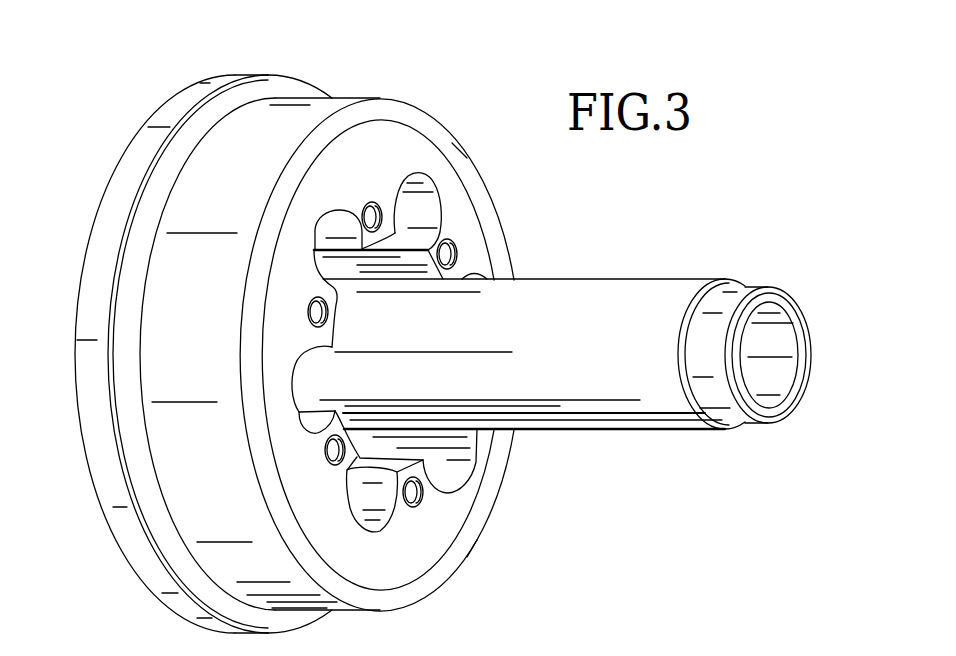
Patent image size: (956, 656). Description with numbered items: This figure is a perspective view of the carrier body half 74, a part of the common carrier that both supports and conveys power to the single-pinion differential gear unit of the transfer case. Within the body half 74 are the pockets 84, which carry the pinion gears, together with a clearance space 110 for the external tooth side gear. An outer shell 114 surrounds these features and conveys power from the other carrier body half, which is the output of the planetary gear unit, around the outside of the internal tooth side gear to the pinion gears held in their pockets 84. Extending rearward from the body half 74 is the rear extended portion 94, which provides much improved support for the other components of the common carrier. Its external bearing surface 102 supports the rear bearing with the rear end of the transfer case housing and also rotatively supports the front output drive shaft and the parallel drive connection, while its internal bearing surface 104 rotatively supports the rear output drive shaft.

The carrier body half 74 is at (180, 88).
The outer shell 114 is at (313, 112).
The pockets 84 is at (352, 220).
The clearance space 110 is at (428, 270).
The rear extended portion 94 is at (603, 362).
The external bearing surface 102 is at (623, 403).
The internal bearing surface 104 is at (781, 330).